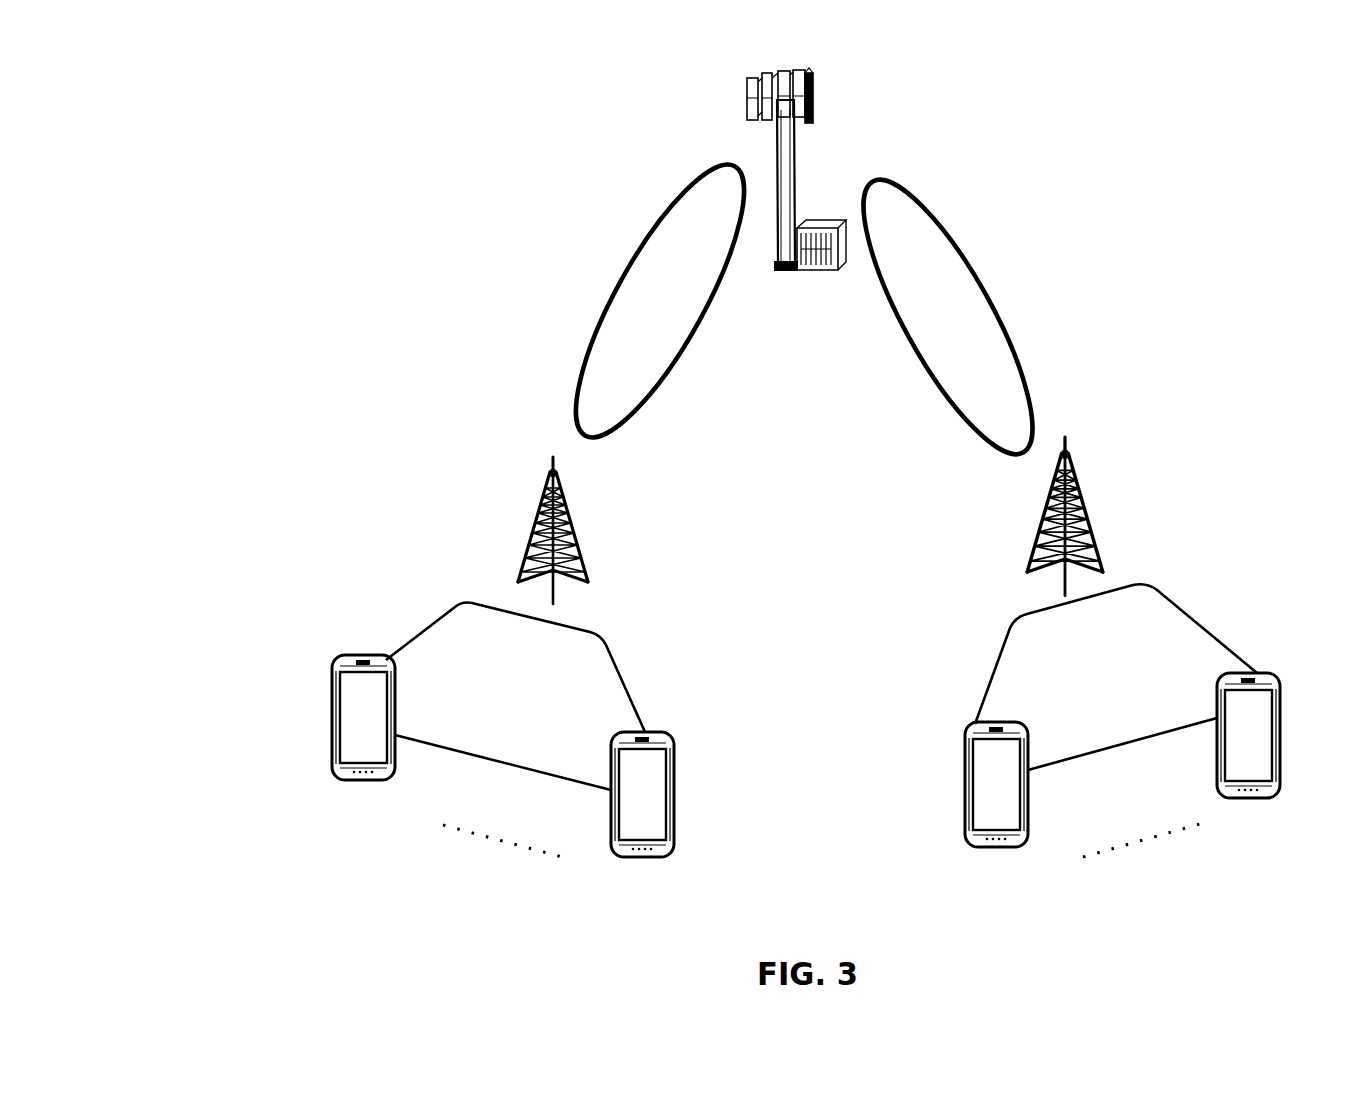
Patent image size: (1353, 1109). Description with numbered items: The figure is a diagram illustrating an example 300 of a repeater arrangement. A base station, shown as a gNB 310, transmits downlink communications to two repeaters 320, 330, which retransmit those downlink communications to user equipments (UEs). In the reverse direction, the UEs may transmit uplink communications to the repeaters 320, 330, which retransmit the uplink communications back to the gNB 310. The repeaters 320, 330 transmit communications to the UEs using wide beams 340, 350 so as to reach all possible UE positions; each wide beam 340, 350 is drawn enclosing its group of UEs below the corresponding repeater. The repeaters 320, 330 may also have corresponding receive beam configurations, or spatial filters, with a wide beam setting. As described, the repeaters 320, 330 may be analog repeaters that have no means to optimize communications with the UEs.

The example 300 is at (230, 101).
The gNB 310 is at (801, 193).
The repeater 320 is at (629, 530).
The repeater 330 is at (1146, 516).
The wide beam 340 is at (505, 751).
The wide beam 350 is at (1124, 737).